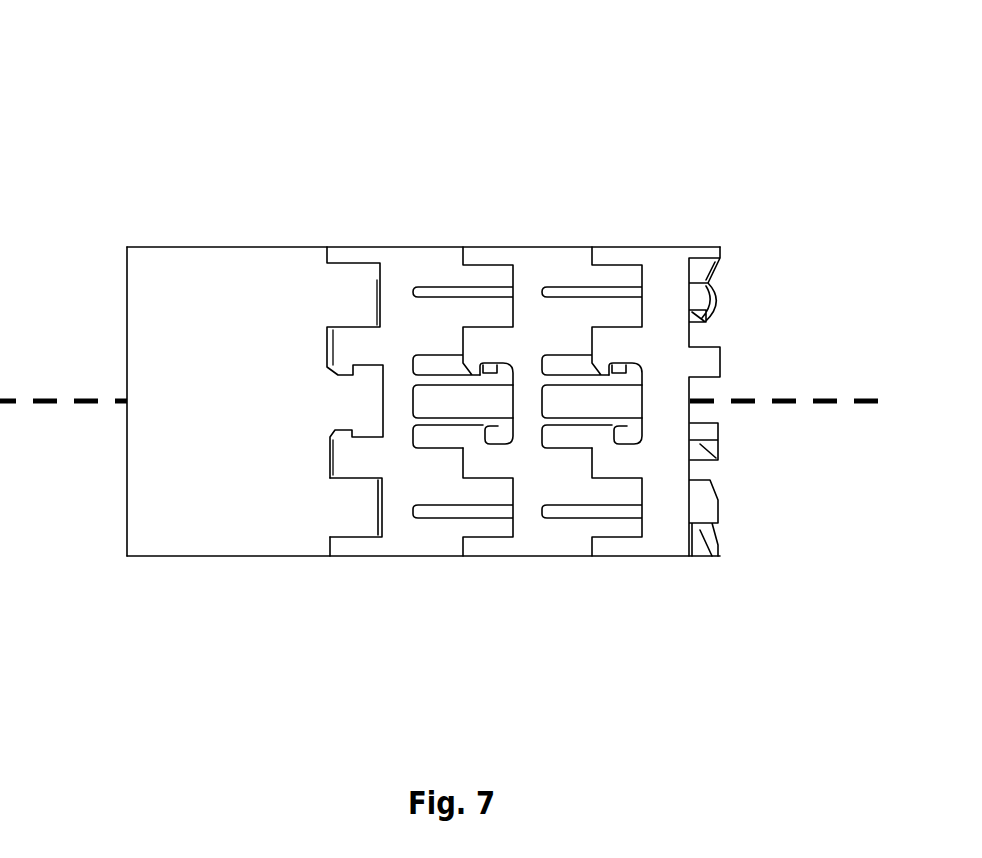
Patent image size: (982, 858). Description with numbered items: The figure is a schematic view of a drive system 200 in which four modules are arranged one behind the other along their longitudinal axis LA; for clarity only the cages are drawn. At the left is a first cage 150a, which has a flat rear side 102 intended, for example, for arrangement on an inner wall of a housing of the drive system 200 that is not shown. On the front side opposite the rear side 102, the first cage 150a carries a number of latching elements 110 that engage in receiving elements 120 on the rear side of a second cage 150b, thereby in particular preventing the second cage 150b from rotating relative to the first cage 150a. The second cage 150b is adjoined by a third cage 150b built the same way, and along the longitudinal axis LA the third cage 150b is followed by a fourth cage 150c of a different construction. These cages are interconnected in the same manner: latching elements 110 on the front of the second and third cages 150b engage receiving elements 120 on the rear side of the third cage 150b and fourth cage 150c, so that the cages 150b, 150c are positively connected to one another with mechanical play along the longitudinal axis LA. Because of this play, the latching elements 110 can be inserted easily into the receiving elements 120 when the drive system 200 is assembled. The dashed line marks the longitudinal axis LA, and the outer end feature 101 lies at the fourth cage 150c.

The drive system 200 is at (152, 105).
The flat rear side 102 is at (127, 382).
The second end pocket 101 is at (723, 445).
The first cage 150a is at (197, 248).
The second cage / third cage 150b is at (403, 247).
The fourth cage 150c is at (648, 247).
The latching element 110 is at (348, 508).
The receiving element 120 is at (360, 545).
The longitudinal axis LA is at (783, 398).